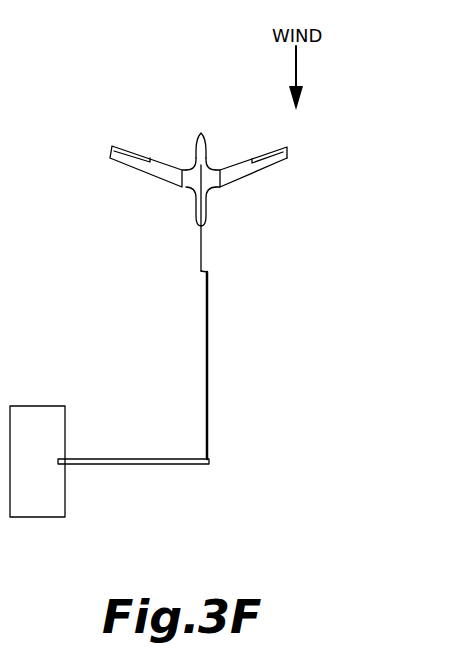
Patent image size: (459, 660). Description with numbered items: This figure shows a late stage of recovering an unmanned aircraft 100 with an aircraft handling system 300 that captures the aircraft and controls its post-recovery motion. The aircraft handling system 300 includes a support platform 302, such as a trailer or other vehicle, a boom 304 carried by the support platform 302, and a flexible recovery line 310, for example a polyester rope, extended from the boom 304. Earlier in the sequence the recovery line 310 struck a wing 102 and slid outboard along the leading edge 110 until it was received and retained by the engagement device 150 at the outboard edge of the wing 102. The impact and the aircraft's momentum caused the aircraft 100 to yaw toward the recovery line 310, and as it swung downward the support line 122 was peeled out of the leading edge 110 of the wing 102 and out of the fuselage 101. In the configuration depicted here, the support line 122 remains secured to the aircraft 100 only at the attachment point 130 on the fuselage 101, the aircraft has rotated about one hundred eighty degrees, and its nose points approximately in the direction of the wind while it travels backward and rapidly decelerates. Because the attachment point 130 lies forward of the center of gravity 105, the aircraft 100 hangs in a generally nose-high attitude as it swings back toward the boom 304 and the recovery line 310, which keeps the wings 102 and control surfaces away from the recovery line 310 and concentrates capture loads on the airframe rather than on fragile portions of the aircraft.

The aircraft 100 is at (194, 206).
The fuselage 101 is at (195, 218).
The wing 102 is at (250, 170).
The center of gravity 105 is at (199, 160).
The leading edge 110 is at (243, 182).
The attachment point 130 is at (207, 166).
The support line 122 is at (203, 247).
The engagement device 150 is at (202, 274).
The aircraft handling system 300 is at (78, 372).
The support platform 302 is at (35, 406).
The boom 304 is at (115, 465).
The recovery line 310 is at (207, 399).